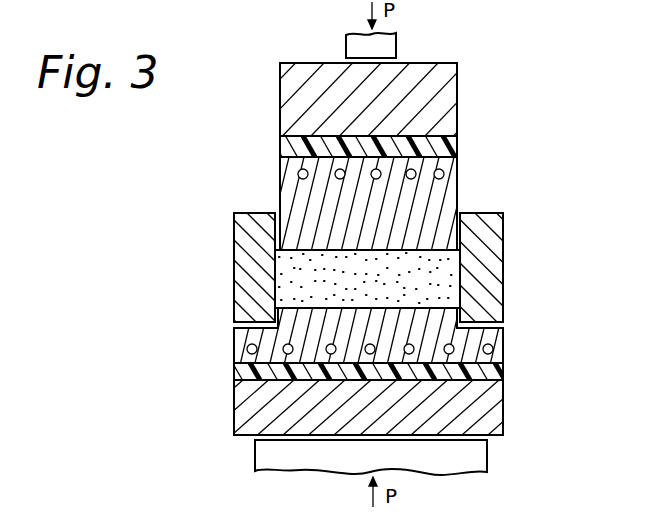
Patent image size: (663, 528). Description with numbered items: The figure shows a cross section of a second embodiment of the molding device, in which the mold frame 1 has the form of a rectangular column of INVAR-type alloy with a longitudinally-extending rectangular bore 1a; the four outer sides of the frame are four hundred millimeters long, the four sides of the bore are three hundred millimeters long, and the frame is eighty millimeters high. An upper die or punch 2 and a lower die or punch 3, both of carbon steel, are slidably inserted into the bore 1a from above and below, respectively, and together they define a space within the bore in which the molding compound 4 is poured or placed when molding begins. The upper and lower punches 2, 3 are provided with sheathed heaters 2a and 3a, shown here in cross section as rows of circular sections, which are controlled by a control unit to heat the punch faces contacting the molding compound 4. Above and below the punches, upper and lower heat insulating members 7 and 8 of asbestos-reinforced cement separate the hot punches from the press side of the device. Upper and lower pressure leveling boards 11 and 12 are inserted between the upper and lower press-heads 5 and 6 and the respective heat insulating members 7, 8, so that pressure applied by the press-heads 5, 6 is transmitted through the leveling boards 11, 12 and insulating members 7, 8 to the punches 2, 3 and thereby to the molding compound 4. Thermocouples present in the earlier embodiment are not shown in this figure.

The mold frame 1 is at (495, 240).
The bore 1a is at (275, 234).
The upper die or punch 2 is at (452, 190).
The sheathed heater 2a is at (298, 174).
The lower die or punch 3 is at (500, 335).
The sheathed heater 3a is at (247, 349).
The molding compound 4 is at (278, 276).
The upper press-head 5 is at (390, 43).
The lower press-head 6 is at (475, 457).
The upper heat insulating member 7 is at (452, 147).
The lower heat insulating member 8 is at (497, 372).
The upper pressure leveling board 11 is at (440, 100).
The lower pressure leveling board 12 is at (495, 412).